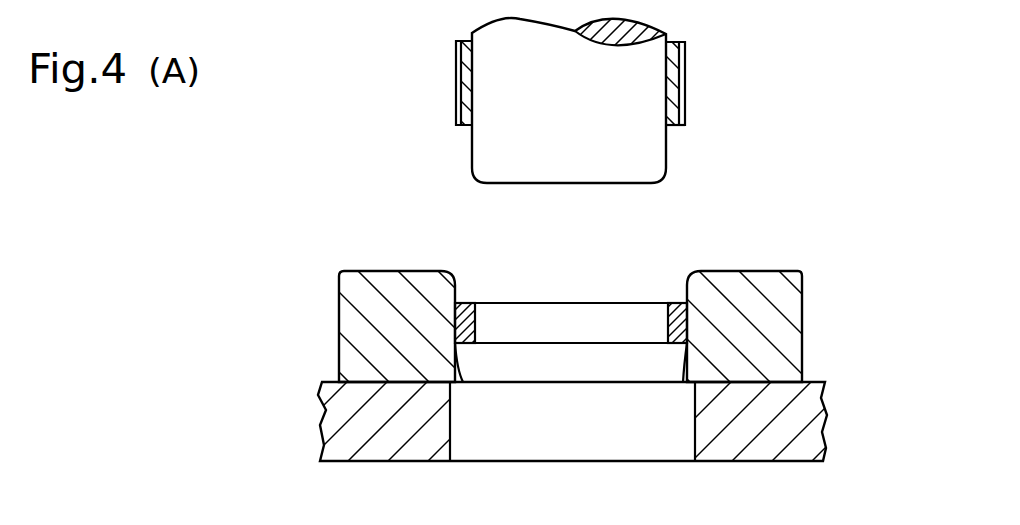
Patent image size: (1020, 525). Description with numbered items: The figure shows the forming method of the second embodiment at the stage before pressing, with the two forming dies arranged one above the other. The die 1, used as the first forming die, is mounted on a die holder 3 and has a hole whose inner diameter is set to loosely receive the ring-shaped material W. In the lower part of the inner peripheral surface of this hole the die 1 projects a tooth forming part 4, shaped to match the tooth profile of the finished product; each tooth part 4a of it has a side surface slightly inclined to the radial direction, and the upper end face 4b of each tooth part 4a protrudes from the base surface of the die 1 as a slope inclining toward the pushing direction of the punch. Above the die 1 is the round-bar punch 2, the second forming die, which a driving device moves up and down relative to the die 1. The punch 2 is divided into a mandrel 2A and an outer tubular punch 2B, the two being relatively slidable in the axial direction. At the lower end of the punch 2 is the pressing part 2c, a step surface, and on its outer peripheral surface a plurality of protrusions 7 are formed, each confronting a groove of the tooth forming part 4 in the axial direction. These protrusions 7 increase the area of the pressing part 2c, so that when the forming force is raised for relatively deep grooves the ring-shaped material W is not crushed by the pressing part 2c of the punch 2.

The die 1 is at (352, 315).
The round-bar punch 2 is at (376, 87).
The mandrel 2A is at (488, 155).
The outer tubular punch 2B is at (465, 108).
The pressing part 2c is at (670, 127).
The protrusions 7 is at (456, 53).
The die holder 3 is at (805, 432).
The tooth forming part 4 is at (480, 379).
The tooth part 4a is at (685, 383).
The upper end face 4b is at (685, 353).
The ring-shaped material W is at (465, 302).